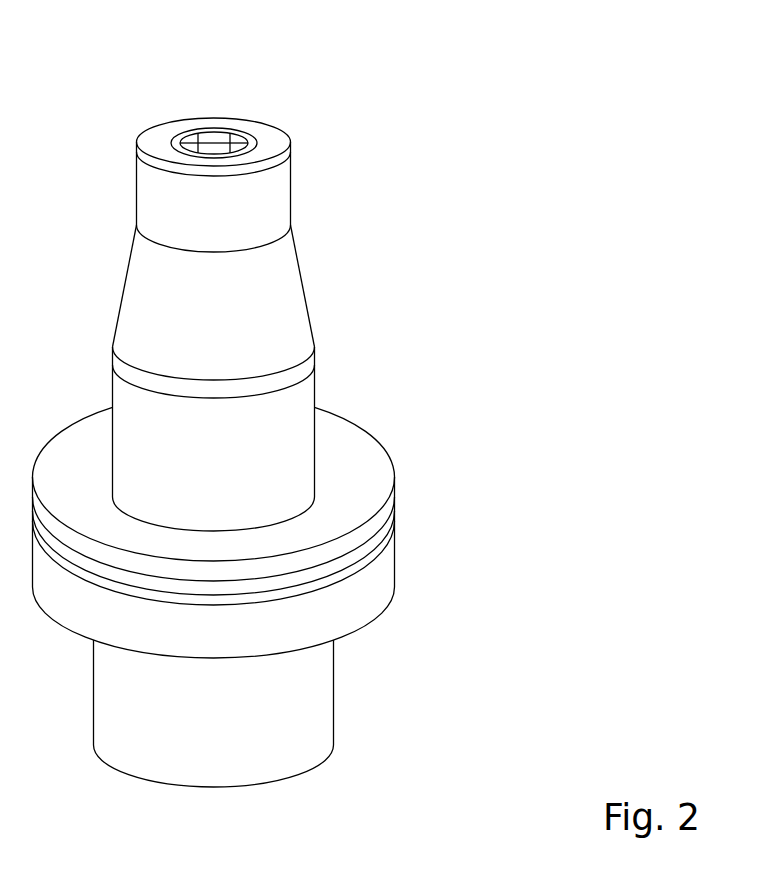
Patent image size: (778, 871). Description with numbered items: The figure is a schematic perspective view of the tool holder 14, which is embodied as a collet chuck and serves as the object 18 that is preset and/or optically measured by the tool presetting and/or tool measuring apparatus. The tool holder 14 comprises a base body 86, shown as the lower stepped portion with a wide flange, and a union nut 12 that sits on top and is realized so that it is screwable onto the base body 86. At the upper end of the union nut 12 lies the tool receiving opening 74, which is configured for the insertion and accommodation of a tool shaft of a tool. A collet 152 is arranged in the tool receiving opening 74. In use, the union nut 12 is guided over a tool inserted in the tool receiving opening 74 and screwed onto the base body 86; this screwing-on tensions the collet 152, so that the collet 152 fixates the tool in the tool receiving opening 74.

The union nut 12 is at (253, 200).
The tool holder 14 is at (287, 506).
The object 18 is at (337, 267).
The base body 86 is at (258, 335).
The collet 152 is at (202, 128).
The tool receiving opening 74 is at (232, 128).